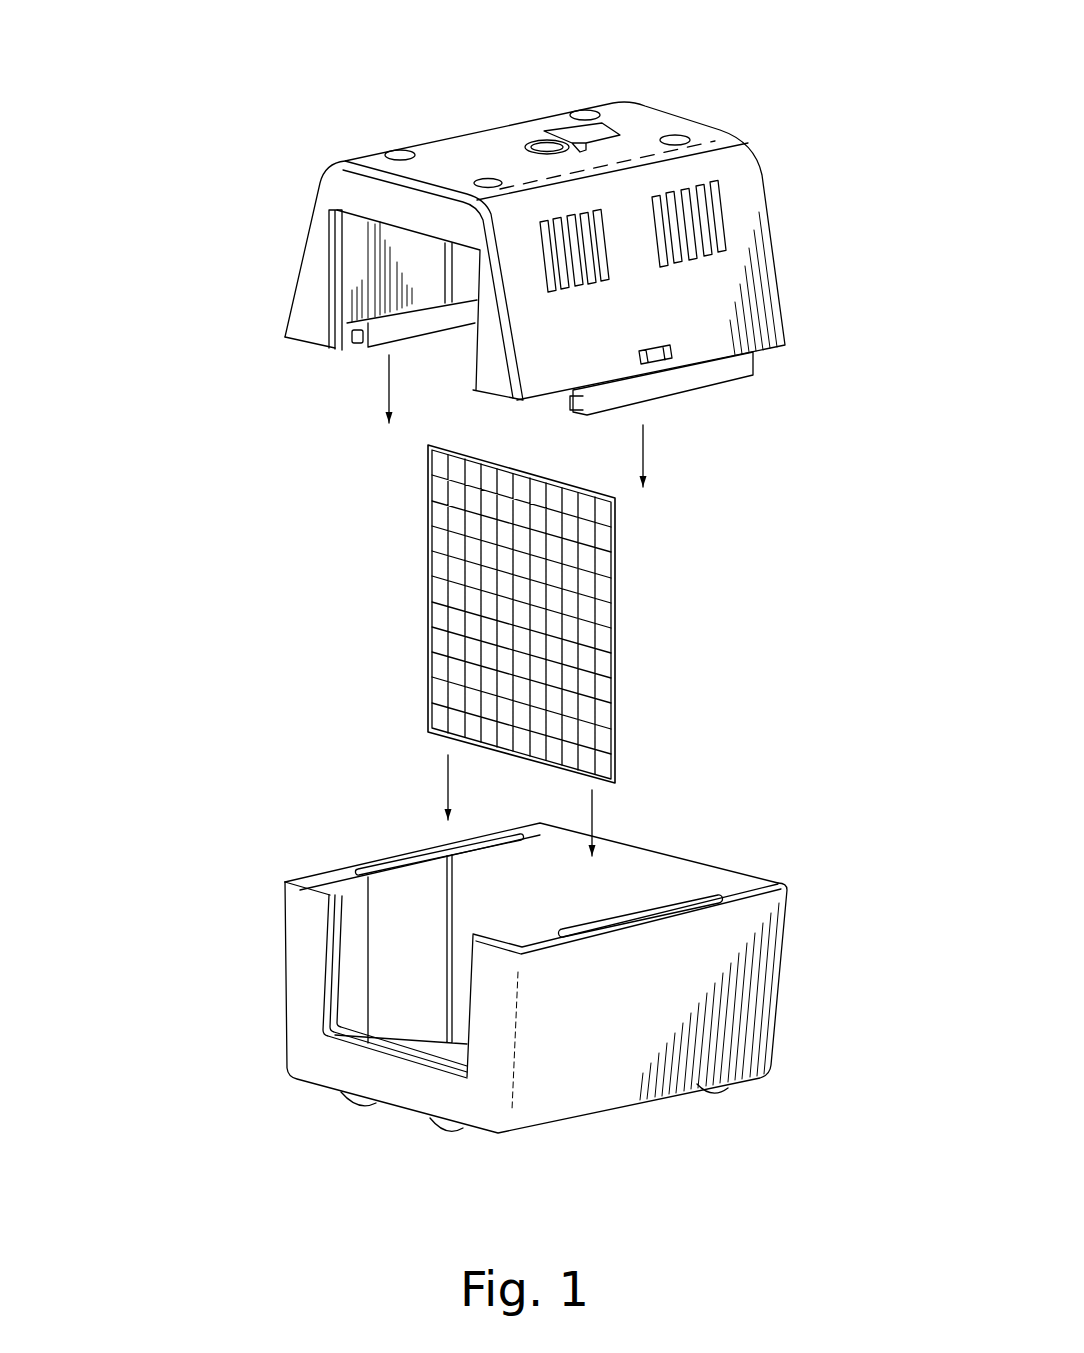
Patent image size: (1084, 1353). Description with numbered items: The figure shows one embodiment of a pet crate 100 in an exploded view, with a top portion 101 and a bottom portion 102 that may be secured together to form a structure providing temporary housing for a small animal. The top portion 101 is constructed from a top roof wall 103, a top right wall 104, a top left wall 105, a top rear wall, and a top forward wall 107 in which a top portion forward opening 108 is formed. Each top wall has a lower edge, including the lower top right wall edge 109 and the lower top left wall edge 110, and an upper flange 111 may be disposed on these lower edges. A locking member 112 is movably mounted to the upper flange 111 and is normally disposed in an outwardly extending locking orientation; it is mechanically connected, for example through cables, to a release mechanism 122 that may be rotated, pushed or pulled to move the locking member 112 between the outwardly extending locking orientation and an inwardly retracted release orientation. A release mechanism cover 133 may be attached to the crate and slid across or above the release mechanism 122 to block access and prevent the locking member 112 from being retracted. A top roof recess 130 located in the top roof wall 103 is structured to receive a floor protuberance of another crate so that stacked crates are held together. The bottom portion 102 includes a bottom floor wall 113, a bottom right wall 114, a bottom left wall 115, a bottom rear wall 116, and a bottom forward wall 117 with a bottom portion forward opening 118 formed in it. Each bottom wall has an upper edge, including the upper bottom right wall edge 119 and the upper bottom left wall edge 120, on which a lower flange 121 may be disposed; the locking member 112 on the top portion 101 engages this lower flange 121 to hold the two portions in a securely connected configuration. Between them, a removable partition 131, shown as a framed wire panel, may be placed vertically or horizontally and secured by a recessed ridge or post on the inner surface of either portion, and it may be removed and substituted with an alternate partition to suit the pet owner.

The pet crate 100 is at (137, 147).
The top portion 101 is at (640, 58).
The bottom portion 102 is at (830, 1032).
The top roof wall 103 is at (441, 152).
The top right wall 104 is at (752, 193).
The top left wall 105 is at (392, 256).
The top forward wall 107 is at (347, 187).
The top portion forward opening 108 is at (403, 232).
The lower top right wall edge 109 is at (785, 360).
The lower top left wall edge 110 is at (341, 348).
The upper flange 111 is at (377, 350).
The locking member 112 is at (349, 349).
The bottom floor wall 113 is at (451, 1054).
The bottom right wall 114 is at (586, 1112).
The bottom left wall 115 is at (390, 954).
The bottom rear wall 116 is at (660, 876).
The bottom forward wall 117 is at (468, 1100).
The bottom portion forward opening 118 is at (366, 1057).
The upper bottom right wall edge 119 is at (766, 886).
The upper bottom left wall edge 120 is at (336, 868).
The lower flange 121 is at (690, 907).
The release mechanism 122 is at (529, 137).
The top roof recess 130 is at (685, 132).
The removable partition 131 is at (633, 620).
The release mechanism cover 133 is at (563, 120).